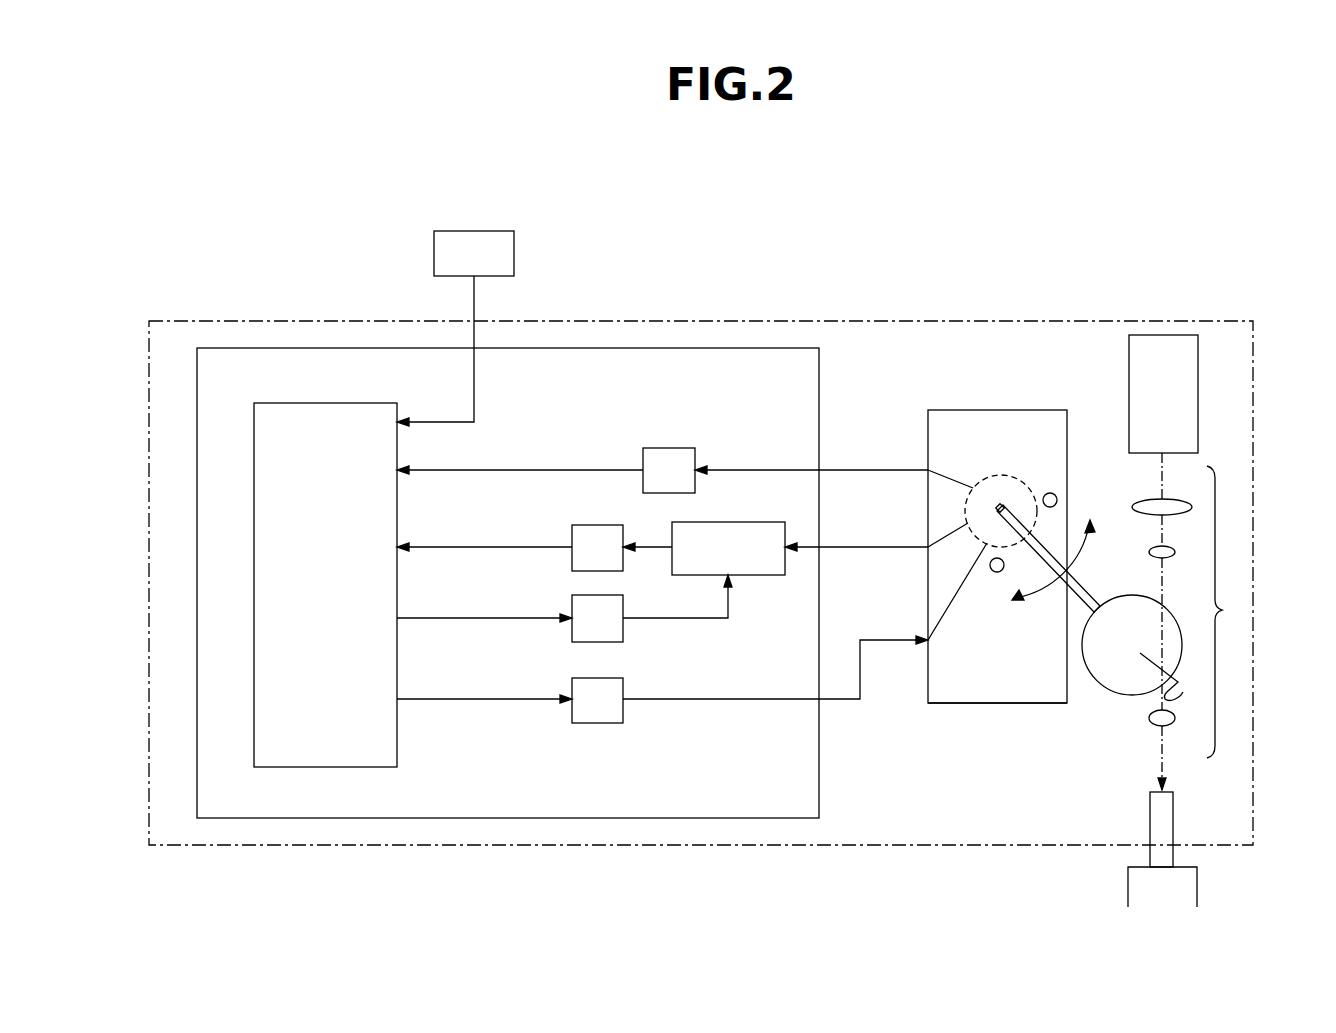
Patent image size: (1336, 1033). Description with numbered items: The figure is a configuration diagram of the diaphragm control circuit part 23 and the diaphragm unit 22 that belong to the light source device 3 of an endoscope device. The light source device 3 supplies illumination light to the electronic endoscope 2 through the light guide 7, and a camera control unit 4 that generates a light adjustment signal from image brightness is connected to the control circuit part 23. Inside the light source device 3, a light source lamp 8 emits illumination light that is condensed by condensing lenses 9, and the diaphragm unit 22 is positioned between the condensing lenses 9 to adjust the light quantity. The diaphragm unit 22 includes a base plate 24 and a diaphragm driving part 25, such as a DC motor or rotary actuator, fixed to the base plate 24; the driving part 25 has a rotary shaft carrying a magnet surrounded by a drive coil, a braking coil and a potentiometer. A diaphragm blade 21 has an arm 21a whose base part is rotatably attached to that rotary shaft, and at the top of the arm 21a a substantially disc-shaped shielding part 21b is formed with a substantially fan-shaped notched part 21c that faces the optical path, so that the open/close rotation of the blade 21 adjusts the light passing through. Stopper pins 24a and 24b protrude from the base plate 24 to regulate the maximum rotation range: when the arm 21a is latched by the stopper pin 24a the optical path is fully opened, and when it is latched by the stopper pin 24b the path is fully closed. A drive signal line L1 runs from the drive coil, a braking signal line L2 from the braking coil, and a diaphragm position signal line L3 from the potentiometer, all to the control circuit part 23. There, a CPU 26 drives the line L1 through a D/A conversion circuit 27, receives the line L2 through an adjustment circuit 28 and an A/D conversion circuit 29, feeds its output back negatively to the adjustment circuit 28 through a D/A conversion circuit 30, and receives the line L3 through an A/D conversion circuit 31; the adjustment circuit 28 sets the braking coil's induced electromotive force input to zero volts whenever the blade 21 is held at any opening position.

The electronic endoscope 2 is at (1214, 886).
The light source device 3 is at (1053, 310).
The camera control unit (CCU) 4 is at (474, 231).
The light guide 7 is at (1173, 818).
The light source lamp 8 is at (1198, 402).
The condensing lenses 9 is at (1222, 610).
The diaphragm blade 21 is at (1119, 586).
The arm 21a is at (1018, 548).
The shielding part 21b is at (1092, 666).
The notched part 21c is at (1150, 710).
The diaphragm unit 22 is at (1000, 716).
The diaphragm control circuit part 23 is at (763, 348).
The base plate 24 is at (965, 410).
The stopper pin 24a is at (995, 573).
The stopper pin 24b is at (1057, 497).
The diaphragm driving part 25 is at (1002, 475).
The CPU 26 is at (397, 752).
The D/A conversion circuit 27 is at (572, 682).
The adjustment circuit 28 is at (763, 578).
The A/D conversion circuit 29 is at (572, 530).
The D/A conversion circuit 30 is at (572, 600).
The A/D conversion circuit 31 is at (667, 448).
The drive signal line L1 is at (892, 645).
The braking signal line L2 is at (870, 545).
The diaphragm position signal line L3 is at (870, 468).